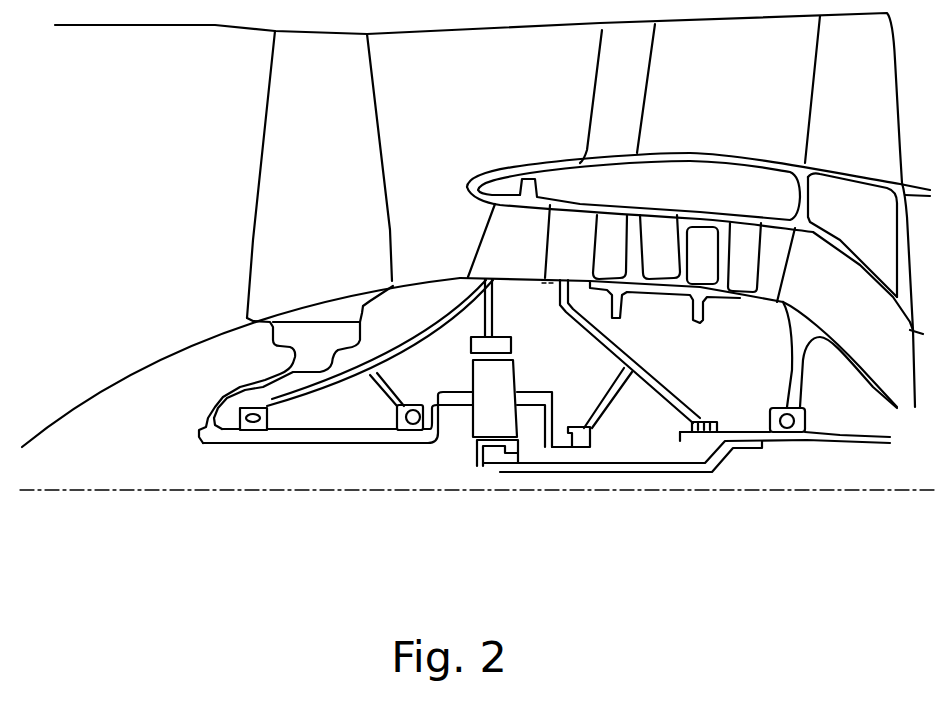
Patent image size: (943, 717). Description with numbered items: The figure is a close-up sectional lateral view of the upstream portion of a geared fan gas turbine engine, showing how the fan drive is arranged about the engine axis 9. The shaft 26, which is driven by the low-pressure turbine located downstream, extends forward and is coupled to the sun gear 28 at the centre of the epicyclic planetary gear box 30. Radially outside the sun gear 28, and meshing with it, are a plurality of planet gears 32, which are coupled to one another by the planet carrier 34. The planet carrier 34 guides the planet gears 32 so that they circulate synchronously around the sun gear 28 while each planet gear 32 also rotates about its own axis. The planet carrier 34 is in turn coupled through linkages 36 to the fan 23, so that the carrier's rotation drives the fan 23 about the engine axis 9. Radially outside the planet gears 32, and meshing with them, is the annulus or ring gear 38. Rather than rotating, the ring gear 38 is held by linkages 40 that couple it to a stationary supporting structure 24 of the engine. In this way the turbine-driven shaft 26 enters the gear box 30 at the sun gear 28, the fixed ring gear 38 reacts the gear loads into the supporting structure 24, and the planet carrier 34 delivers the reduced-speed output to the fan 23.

The engine axis 9 is at (235, 491).
The fan 23 is at (278, 177).
The stationary supporting structure 24 is at (505, 232).
The shaft 26 is at (660, 472).
The sun gear 28 is at (498, 452).
The epicyclic planetary gear box 30 is at (437, 463).
The planet gears 32 is at (483, 420).
The planet carrier 34 is at (548, 435).
The linkages 36 is at (437, 445).
The ring gear 38 is at (473, 347).
The linkages 40 is at (495, 322).